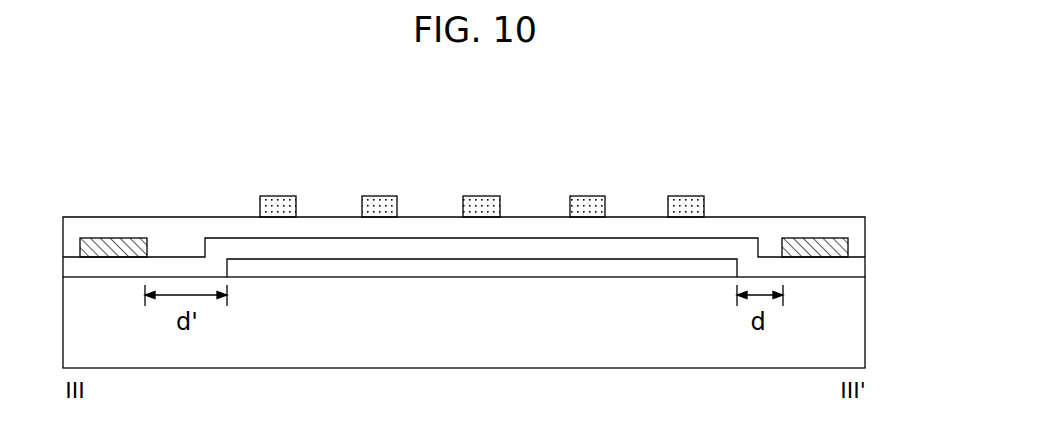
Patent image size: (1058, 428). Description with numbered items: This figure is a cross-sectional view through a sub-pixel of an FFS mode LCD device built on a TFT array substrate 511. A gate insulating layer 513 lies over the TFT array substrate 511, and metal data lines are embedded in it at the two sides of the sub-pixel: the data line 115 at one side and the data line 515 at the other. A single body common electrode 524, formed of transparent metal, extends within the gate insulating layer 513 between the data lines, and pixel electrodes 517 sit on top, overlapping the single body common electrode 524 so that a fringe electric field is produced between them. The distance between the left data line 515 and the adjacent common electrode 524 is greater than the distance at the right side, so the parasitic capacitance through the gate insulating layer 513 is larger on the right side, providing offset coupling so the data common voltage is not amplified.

The data line 115 is at (115, 240).
The pixel electrode 517 is at (287, 203).
The single body common electrode 524 is at (650, 268).
The data line 515 is at (814, 238).
The gate insulating layer 513 is at (858, 265).
The TFT array substrate 511 is at (858, 320).